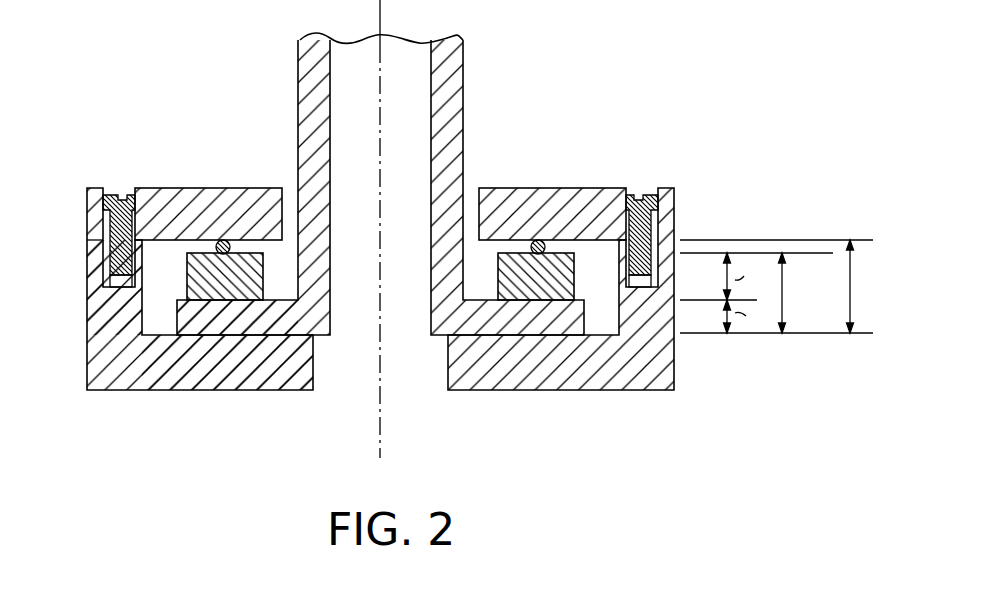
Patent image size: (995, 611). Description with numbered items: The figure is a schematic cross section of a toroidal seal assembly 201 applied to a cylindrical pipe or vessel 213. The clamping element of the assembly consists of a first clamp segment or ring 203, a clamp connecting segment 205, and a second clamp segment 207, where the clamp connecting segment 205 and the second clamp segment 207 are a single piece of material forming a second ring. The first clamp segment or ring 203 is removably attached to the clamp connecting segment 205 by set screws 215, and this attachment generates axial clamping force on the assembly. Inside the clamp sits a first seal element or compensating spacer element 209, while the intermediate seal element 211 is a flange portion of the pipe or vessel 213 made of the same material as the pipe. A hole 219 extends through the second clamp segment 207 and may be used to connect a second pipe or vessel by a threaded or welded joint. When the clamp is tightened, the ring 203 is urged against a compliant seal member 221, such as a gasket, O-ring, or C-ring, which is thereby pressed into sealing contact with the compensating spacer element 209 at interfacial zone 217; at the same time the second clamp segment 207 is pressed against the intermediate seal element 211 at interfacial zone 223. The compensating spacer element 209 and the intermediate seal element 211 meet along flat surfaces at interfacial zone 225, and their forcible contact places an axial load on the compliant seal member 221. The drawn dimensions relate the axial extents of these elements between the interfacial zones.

The seal assembly 201 is at (445, 230).
The first clamp segment or ring 203 is at (212, 205).
The clamp connecting segment 205 is at (110, 302).
The second clamp segment 207 is at (130, 373).
The first seal element or compensating spacer element 209 is at (200, 278).
The intermediate seal element 211 is at (177, 317).
The cylindrical pipe or vessel 213 is at (470, 99).
The set screws 215 is at (108, 212).
The interfacial zone 217 is at (248, 251).
The hole 219 is at (408, 373).
The compliant seal member 221 is at (214, 239).
The interfacial zone 223 is at (203, 342).
The interfacial zone 225 is at (240, 303).